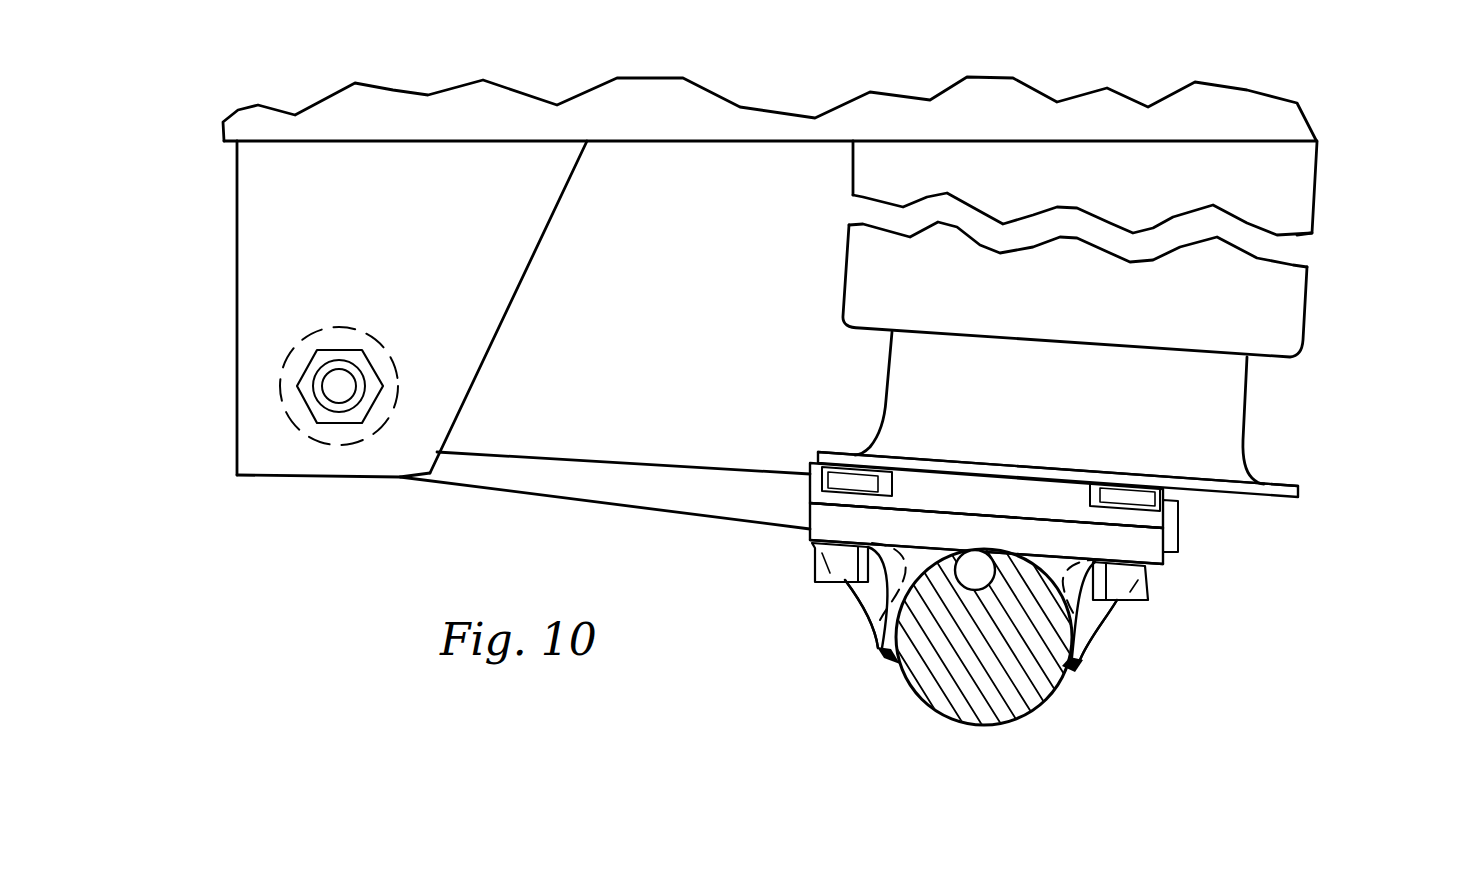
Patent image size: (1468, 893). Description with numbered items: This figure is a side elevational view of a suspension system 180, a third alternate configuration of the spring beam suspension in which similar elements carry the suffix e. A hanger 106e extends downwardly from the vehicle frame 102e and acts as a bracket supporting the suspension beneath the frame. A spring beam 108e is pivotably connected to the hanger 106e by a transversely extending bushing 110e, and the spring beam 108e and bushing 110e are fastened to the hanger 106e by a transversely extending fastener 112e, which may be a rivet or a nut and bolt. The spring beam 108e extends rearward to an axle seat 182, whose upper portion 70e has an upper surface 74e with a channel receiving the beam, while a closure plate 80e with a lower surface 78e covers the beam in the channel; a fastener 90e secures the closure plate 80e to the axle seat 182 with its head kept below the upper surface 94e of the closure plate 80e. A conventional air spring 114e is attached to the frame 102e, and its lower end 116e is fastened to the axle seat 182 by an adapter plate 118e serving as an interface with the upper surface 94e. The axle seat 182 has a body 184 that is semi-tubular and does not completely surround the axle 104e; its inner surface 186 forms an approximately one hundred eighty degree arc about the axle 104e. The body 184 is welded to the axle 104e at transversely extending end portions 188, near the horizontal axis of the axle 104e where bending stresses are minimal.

The suspension system 180 is at (1396, 190).
The vehicle frame 102e is at (726, 142).
The hanger 106e is at (546, 236).
The spring beam 108e is at (600, 460).
The bushing 110e is at (281, 388).
The fastener 112e is at (312, 372).
The air spring 114e is at (1322, 298).
The lower end 116e is at (1248, 400).
The adapter plate 118e is at (1300, 487).
The upper surface 94e is at (1055, 474).
The closure plate 80e is at (795, 468).
The axle seat upper portion 70e is at (798, 518).
The upper surface 74e is at (976, 510).
The lower surface 78e is at (1082, 522).
The axle 104e is at (1030, 718).
The inner surface 186 is at (962, 562).
The fastener 90e is at (800, 568).
The end portions 188 is at (866, 628).
The body 184 is at (852, 607).
The axle seat 182 is at (1116, 630).